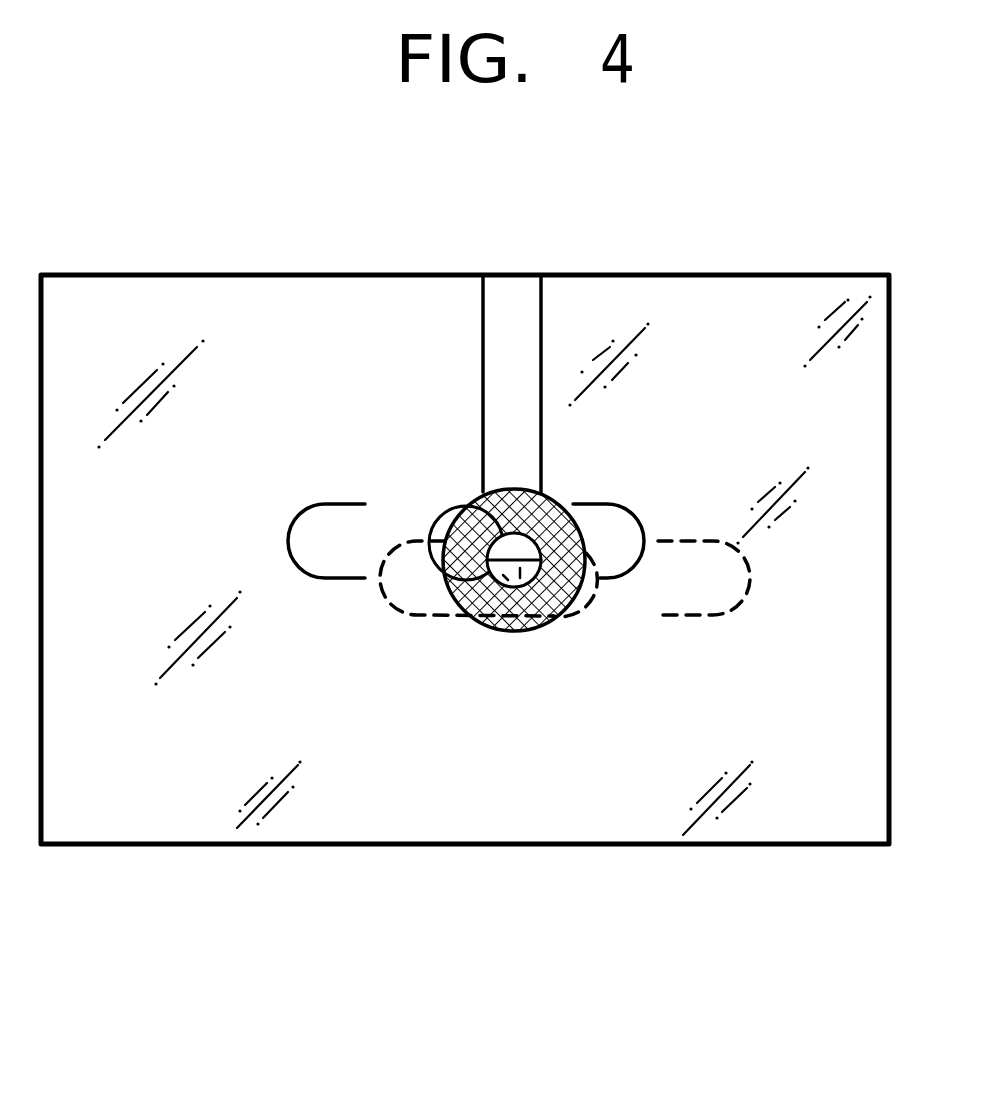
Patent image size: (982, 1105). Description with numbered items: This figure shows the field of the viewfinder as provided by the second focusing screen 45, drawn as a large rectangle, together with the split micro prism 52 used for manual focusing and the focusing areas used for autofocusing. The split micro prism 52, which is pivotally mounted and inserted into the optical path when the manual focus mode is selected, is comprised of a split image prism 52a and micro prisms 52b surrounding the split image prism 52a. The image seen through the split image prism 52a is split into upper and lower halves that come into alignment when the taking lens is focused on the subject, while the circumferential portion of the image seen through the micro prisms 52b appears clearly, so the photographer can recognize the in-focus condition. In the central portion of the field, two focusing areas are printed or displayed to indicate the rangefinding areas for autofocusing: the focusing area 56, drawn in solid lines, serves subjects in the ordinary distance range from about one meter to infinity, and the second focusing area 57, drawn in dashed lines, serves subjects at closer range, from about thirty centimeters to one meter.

The second focusing screen 45 is at (165, 818).
The split micro prism 52 is at (653, 745).
The split image prism 52a is at (498, 632).
The micro prisms 52b is at (540, 630).
The focusing area 56 is at (292, 520).
The second focusing area 57 is at (727, 613).